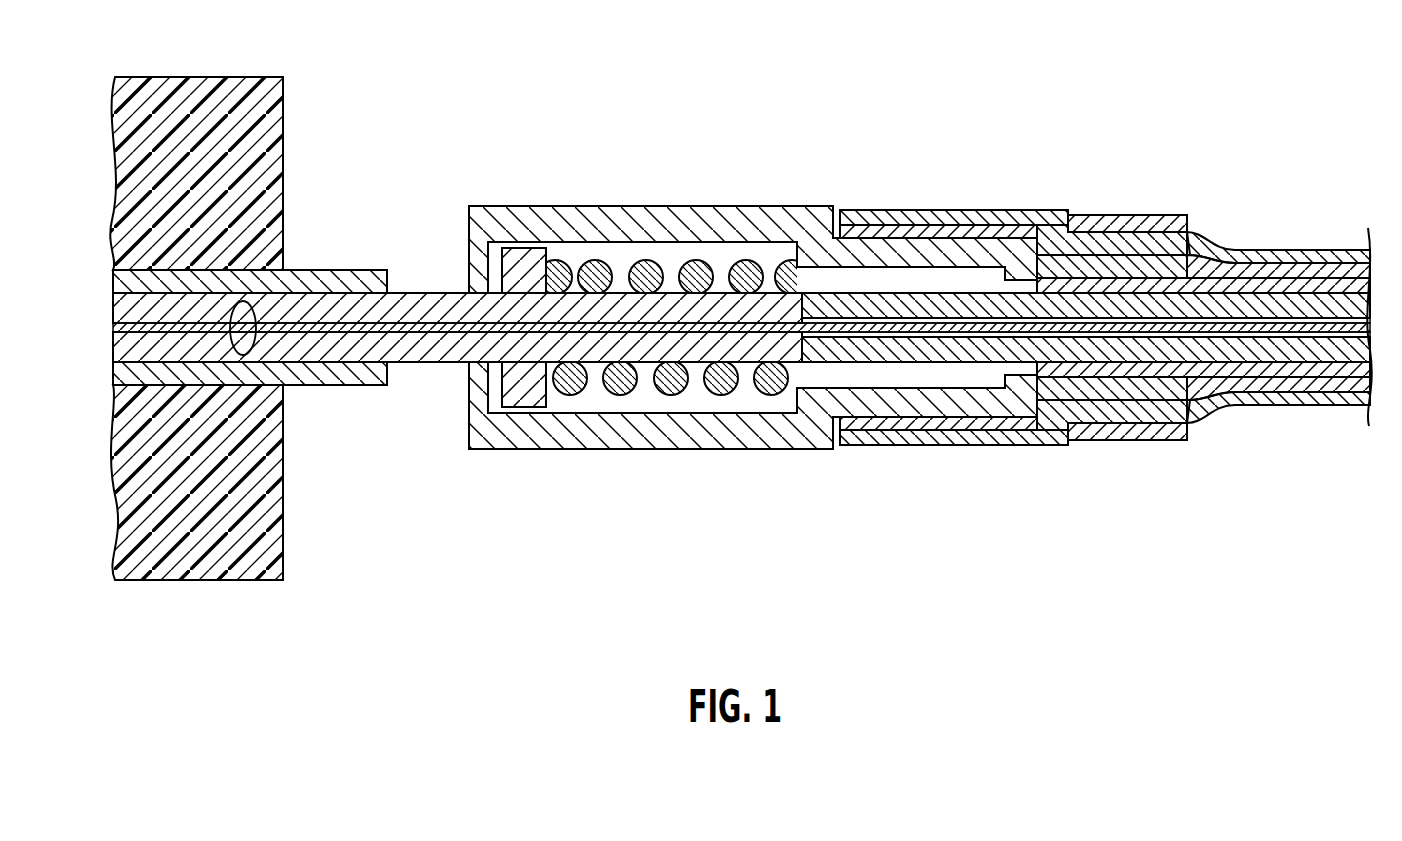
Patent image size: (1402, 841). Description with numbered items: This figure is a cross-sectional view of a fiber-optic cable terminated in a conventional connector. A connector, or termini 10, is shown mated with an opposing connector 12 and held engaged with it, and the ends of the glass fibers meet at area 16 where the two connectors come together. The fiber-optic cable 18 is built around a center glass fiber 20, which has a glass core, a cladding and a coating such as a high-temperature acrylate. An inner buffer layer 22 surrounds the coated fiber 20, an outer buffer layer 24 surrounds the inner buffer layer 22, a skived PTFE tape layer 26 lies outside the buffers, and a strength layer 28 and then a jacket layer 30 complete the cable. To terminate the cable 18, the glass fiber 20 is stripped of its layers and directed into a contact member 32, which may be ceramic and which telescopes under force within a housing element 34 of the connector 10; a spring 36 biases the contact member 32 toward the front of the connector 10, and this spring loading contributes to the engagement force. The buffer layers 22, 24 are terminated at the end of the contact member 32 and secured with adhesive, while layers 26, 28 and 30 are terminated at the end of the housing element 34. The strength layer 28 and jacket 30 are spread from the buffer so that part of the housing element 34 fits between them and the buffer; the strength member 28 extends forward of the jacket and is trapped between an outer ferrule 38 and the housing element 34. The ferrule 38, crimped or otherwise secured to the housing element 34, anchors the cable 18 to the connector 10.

The connector 10 is at (766, 160).
The opposing connector 12 is at (351, 91).
The fiber mating area 16 is at (255, 352).
The fiber-optic cable 18 is at (1283, 228).
The center glass fiber 20 is at (425, 330).
The inner buffer layer 22 is at (900, 338).
The outer buffer layer 24 is at (978, 350).
The skived PTFE tape layer 26 is at (1100, 372).
The strength layer 28 is at (1183, 405).
The jacket layer 30 is at (1318, 404).
The contact member 32 is at (648, 413).
The housing element 34 is at (691, 206).
The spring 36 is at (648, 262).
The outer ferrule 38 is at (1112, 215).